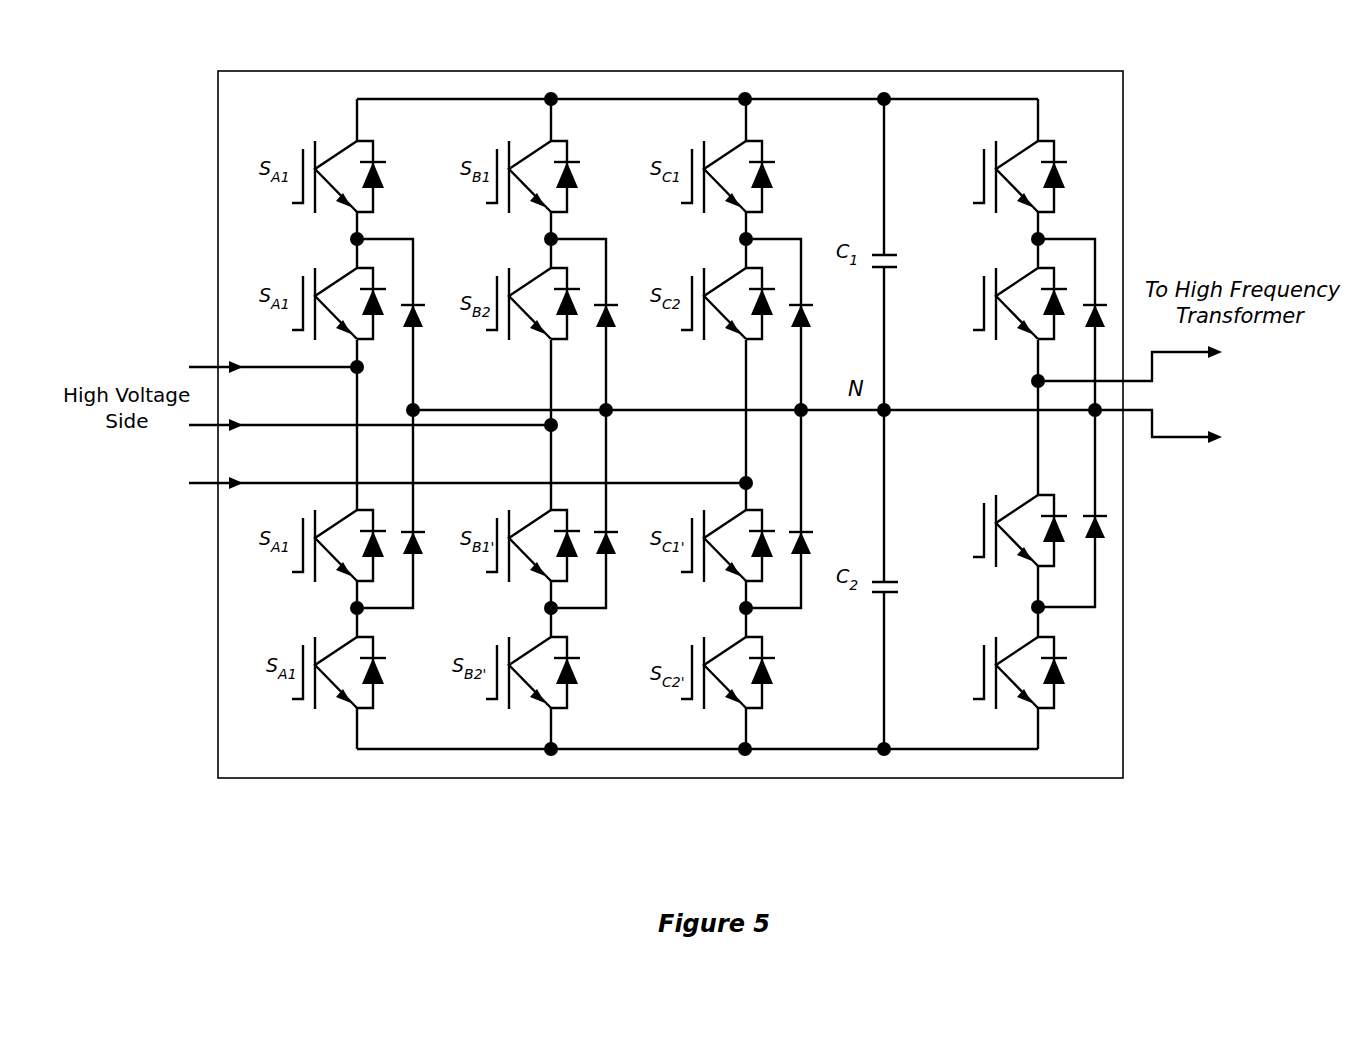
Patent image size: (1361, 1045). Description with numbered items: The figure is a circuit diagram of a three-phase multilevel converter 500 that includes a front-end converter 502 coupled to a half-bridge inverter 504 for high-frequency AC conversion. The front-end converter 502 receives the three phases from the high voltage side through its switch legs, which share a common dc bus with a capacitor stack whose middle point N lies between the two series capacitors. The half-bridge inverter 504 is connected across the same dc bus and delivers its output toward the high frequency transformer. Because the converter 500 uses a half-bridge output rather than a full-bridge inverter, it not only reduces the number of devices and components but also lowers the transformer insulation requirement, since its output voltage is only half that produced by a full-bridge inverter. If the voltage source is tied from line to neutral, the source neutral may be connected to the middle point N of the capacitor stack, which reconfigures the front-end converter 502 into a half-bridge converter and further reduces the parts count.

The three-phase multilevel converter 500 is at (670, 393).
The front-end converter 502 is at (553, 70).
The half-bridge inverter 504 is at (1082, 96).